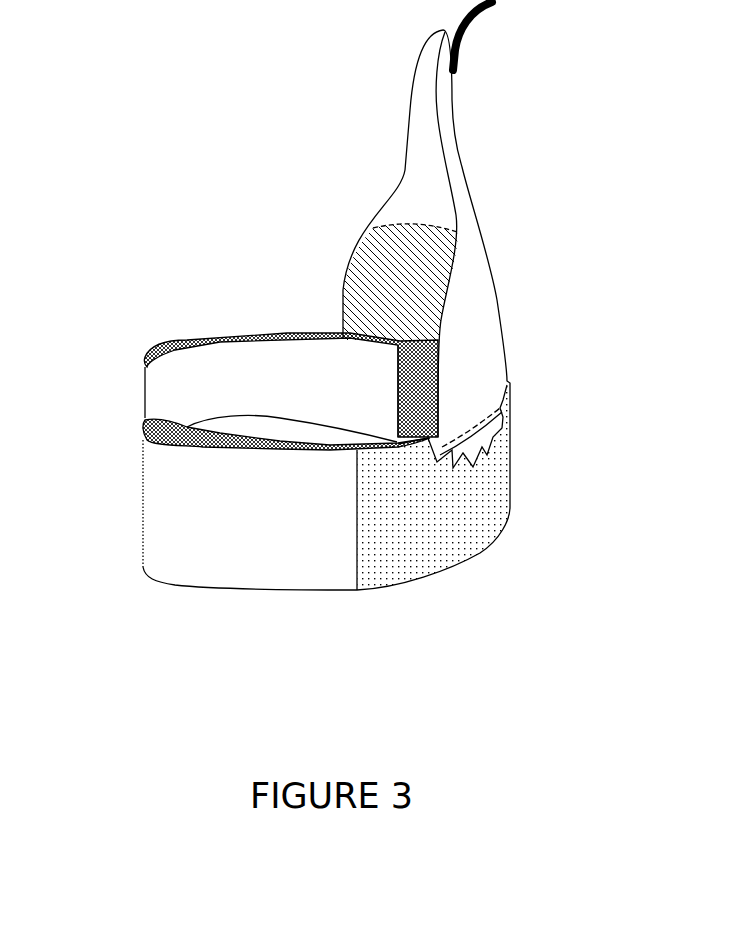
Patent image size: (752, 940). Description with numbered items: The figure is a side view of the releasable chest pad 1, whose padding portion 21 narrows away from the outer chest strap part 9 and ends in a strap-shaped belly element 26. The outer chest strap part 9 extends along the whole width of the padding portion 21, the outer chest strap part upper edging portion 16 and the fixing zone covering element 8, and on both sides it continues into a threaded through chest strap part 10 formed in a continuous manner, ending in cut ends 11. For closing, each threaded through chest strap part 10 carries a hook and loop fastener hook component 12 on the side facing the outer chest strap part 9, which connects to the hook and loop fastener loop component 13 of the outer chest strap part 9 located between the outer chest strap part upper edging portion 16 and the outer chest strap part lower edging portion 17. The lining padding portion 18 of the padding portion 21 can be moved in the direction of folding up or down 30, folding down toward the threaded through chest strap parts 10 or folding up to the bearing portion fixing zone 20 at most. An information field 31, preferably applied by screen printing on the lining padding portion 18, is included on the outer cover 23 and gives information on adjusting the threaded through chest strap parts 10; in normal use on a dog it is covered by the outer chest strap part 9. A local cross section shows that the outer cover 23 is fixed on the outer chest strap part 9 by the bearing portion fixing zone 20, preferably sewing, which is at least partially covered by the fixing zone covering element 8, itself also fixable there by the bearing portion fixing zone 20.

The releasable chest pad 1 is at (510, 30).
The fixing zone covering element 8 is at (445, 538).
The outer chest strap part 9 is at (173, 547).
The threaded through chest strap parts 10 is at (220, 427).
The cut ends 11 is at (398, 427).
The hook and loop fastener hook component 12 is at (175, 425).
The hook and loop fastener loop component 13 is at (183, 340).
The outer chest strap part upper edging portion 16 is at (175, 437).
The outer chest strap part lower edging portion 17 is at (203, 588).
The lining padding portion 18 is at (440, 30).
The bearing portion fixing zone 20 is at (505, 420).
The padding portion 21 is at (583, 30).
The outer cover 23 is at (413, 182).
The strap-shaped belly element 26 is at (472, 33).
The direction of folding up or down 30 is at (416, 113).
The information field 31 is at (427, 253).